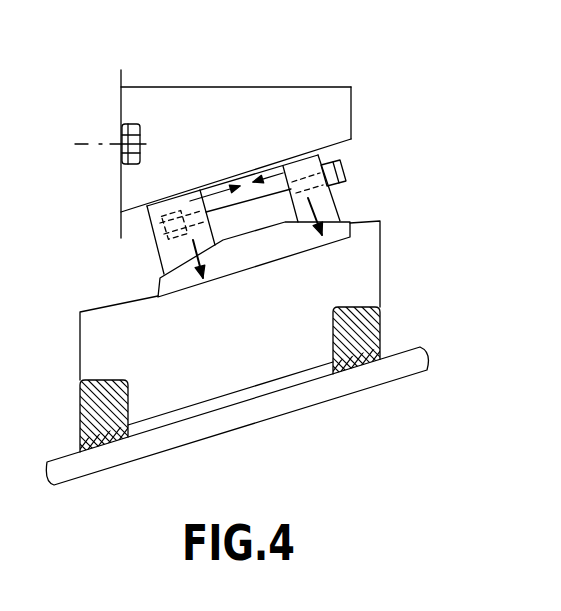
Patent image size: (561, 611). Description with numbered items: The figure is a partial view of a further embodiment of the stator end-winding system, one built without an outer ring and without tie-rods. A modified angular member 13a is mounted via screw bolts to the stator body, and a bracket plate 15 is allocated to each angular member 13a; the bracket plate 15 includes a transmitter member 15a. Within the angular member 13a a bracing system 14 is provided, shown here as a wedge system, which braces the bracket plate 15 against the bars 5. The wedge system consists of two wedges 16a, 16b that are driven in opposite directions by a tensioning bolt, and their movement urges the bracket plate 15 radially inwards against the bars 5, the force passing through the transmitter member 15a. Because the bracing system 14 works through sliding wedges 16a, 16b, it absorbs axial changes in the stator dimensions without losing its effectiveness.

The bars 5 is at (253, 413).
The angular member 13a is at (273, 108).
The bracing system 14 is at (342, 203).
The bracket plate 15 is at (363, 277).
The transmitter member 15a is at (350, 225).
The wedge 16a is at (345, 174).
The wedge 16b is at (297, 121).